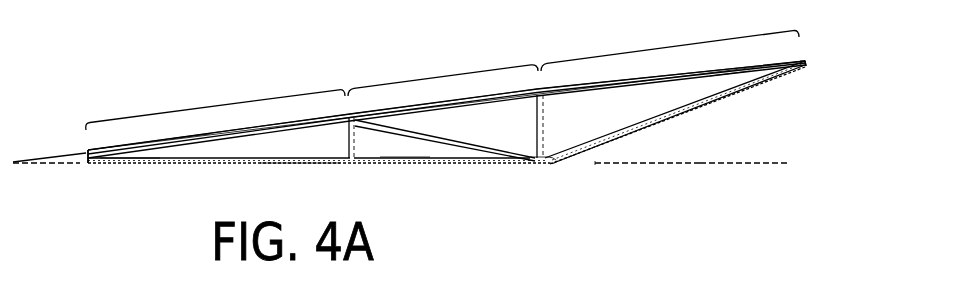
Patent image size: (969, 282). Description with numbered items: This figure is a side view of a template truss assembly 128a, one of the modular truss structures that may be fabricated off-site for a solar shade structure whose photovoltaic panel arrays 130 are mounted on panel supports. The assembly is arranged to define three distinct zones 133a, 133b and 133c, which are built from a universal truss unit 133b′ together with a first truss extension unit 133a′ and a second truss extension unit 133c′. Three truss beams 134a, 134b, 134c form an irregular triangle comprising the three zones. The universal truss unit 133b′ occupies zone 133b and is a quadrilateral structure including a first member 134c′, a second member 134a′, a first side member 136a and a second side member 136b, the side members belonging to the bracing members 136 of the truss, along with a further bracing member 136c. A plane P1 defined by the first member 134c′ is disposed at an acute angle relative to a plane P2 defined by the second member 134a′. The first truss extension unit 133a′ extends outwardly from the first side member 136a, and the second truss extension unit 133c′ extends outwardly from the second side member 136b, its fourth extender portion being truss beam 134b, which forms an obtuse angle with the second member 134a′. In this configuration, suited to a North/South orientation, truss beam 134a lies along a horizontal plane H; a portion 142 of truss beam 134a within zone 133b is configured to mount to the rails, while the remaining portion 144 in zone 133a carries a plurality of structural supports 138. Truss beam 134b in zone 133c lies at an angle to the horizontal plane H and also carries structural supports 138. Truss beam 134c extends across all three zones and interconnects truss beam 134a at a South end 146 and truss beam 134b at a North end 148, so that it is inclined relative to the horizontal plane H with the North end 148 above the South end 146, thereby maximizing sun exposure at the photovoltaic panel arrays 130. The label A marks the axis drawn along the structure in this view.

The truss assembly 128a is at (286, 56).
The photovoltaic panel array 130 is at (108, 150).
The first zone 133a is at (213, 106).
The second zone 133b is at (440, 76).
The third zone 133c is at (665, 47).
The first truss extension unit 133a′ is at (190, 136).
The universal truss unit 133b′ is at (431, 116).
The second truss extension unit 133c′ is at (727, 69).
The truss beam 134a is at (243, 165).
The second member 134a′ is at (470, 164).
The truss beam 134b is at (675, 117).
The truss beam 134c is at (519, 98).
The first member 134c′ is at (450, 106).
The bracing members 136 is at (448, 126).
The first side member 136a is at (357, 147).
The second side member 136b is at (541, 112).
The bracing member 136c is at (500, 167).
The structural support 138 is at (197, 164).
The portion of truss beam 142 is at (416, 156).
The remaining portion of truss beam 144 is at (148, 165).
The South end 146 is at (84, 164).
The North end 148 is at (808, 64).
The axis A is at (62, 153).
The plane P1 is at (807, 60).
The horizontal plane H is at (647, 163).
The plane P2 is at (786, 163).